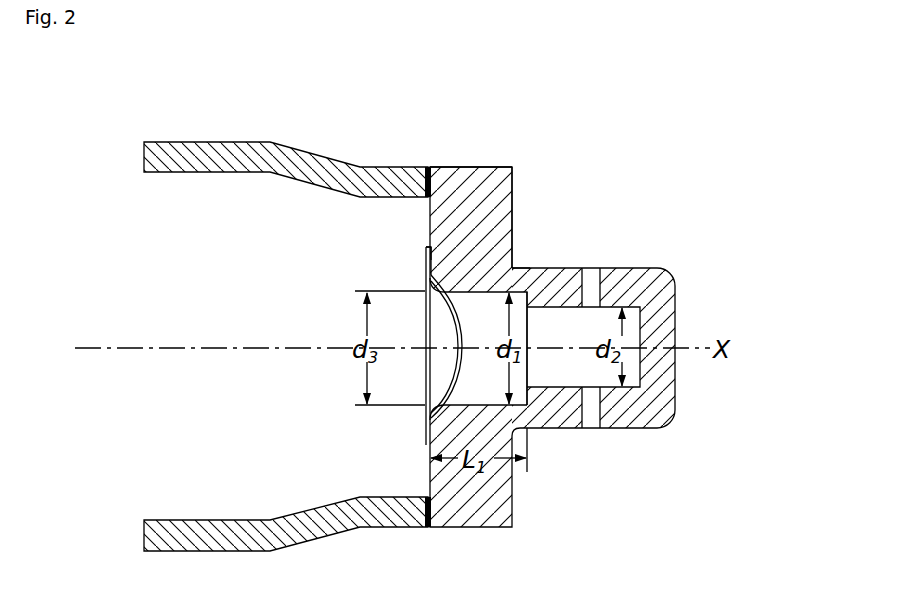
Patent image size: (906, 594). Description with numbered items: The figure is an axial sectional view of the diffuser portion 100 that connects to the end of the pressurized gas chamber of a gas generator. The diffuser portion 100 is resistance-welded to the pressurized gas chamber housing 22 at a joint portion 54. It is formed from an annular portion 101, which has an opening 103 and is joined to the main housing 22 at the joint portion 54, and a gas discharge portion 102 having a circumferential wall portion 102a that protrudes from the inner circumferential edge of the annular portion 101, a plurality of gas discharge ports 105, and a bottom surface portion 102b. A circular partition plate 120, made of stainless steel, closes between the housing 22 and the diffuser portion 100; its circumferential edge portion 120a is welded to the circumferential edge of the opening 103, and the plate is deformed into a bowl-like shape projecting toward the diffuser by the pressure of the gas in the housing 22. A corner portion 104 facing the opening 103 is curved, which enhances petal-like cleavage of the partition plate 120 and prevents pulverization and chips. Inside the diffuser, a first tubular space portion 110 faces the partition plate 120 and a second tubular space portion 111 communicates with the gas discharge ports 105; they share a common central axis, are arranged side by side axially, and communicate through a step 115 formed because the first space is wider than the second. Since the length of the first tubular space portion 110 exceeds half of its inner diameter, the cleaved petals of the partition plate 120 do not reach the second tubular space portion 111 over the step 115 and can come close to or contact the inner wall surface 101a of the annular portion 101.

The pressurized gas chamber housing 22 is at (190, 146).
The joint portion 54 is at (461, 166).
The diffuser portion 100 is at (680, 133).
The annular portion 101 is at (516, 194).
The inner wall surface 101a is at (506, 274).
The gas discharge portion 102 is at (650, 262).
The circumferential wall portion 102a is at (632, 429).
The bottom surface portion 102b is at (676, 300).
The opening 103 is at (425, 377).
The corner portion 104 is at (442, 280).
The gas discharge port 105 is at (597, 268).
The first tubular space portion 110 is at (500, 398).
The second tubular space portion 111 is at (582, 343).
The step 115 is at (527, 406).
The circular partition plate 120 is at (514, 268).
The circumferential edge portion 120a is at (427, 252).